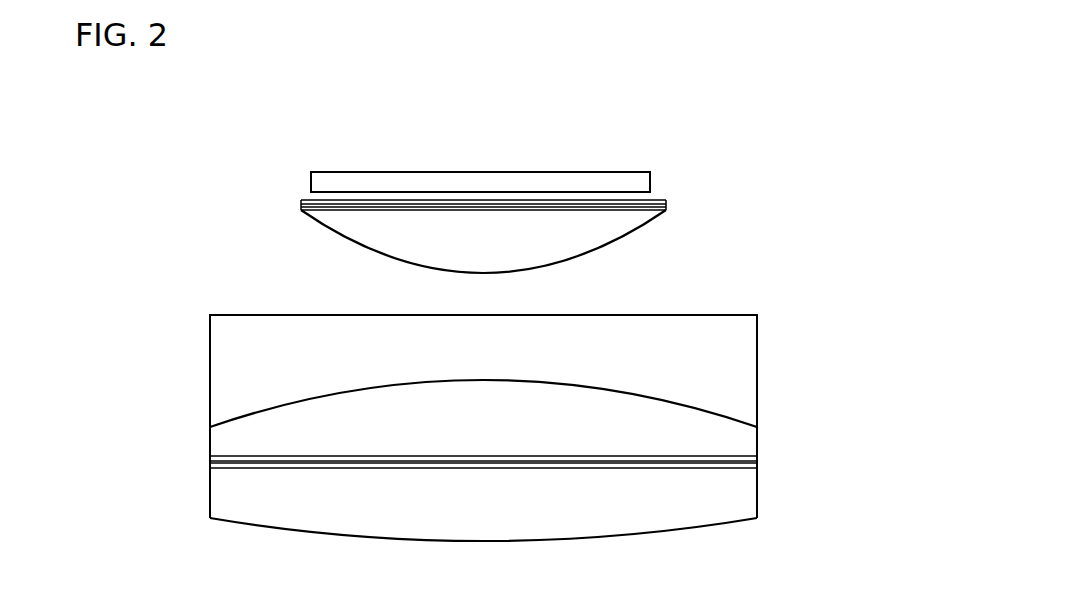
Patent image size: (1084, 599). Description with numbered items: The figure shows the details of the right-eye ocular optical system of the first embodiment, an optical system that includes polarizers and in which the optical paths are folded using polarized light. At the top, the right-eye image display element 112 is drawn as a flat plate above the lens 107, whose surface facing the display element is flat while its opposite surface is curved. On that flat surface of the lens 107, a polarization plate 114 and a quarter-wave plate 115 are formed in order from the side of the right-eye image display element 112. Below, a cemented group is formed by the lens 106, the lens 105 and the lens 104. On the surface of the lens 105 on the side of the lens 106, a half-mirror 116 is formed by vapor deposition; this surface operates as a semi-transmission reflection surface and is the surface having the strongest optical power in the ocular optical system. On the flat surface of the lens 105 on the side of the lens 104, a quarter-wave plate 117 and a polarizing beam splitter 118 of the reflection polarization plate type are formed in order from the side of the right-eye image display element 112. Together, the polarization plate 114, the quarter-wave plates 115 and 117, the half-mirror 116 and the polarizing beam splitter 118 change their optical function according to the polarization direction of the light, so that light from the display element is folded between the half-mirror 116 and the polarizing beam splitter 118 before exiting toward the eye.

The lens 104 is at (740, 505).
The lens 105 is at (740, 443).
The lens 106 is at (740, 347).
The lens 107 is at (653, 223).
The right-eye image display element 112 is at (547, 171).
The polarization plate 114 is at (300, 202).
The λ/4 plate 115 is at (300, 209).
The half-mirror 116 is at (247, 413).
The λ/4 plate 117 is at (233, 457).
The polarizing beam splitter 118 is at (233, 467).